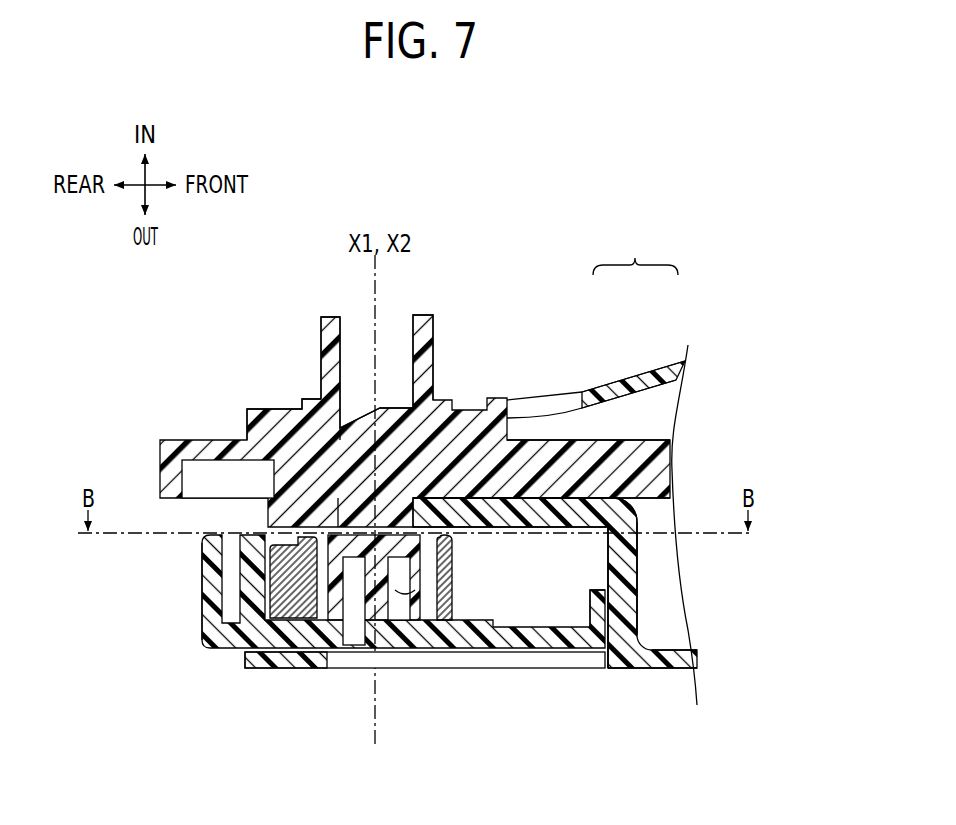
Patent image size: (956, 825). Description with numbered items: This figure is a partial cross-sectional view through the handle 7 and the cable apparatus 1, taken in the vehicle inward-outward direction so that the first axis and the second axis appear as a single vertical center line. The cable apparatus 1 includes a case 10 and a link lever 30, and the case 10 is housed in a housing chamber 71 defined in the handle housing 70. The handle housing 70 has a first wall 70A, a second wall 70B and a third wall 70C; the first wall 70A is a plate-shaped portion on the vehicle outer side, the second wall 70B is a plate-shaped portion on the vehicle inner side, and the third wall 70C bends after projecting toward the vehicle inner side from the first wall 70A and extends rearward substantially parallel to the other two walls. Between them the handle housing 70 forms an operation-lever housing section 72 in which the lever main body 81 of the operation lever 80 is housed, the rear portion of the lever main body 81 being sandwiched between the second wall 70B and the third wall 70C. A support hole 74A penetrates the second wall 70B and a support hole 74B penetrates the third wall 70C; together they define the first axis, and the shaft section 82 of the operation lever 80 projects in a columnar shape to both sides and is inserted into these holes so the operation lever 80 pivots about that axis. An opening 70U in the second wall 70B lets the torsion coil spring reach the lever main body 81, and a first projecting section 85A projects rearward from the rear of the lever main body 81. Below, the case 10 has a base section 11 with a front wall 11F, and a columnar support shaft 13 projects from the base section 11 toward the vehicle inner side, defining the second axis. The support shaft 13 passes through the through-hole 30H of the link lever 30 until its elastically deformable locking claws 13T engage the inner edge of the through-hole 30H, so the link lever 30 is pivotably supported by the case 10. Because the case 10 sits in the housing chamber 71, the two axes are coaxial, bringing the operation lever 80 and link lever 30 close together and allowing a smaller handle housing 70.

The cable apparatus 1 is at (192, 637).
The handle 7 is at (635, 251).
The case 10 is at (218, 653).
The base section 11 is at (556, 640).
The front wall 11F is at (597, 588).
The support shaft 13 is at (350, 548).
The locking claws 13T is at (355, 548).
The link lever 30 is at (455, 592).
The through-hole 30H is at (405, 595).
The handle housing 70 is at (668, 360).
The first wall 70A is at (697, 657).
The second wall 70B is at (675, 373).
The third wall 70C is at (503, 513).
The opening 70U is at (578, 398).
The housing chamber 71 is at (605, 552).
The operation-lever housing section 72 is at (657, 420).
The support hole 74A is at (383, 410).
The support hole 74B is at (292, 412).
The operation lever 80 is at (608, 438).
The lever main body 81 is at (662, 460).
The shaft section 82 is at (393, 420).
The first projecting section 85A is at (172, 481).